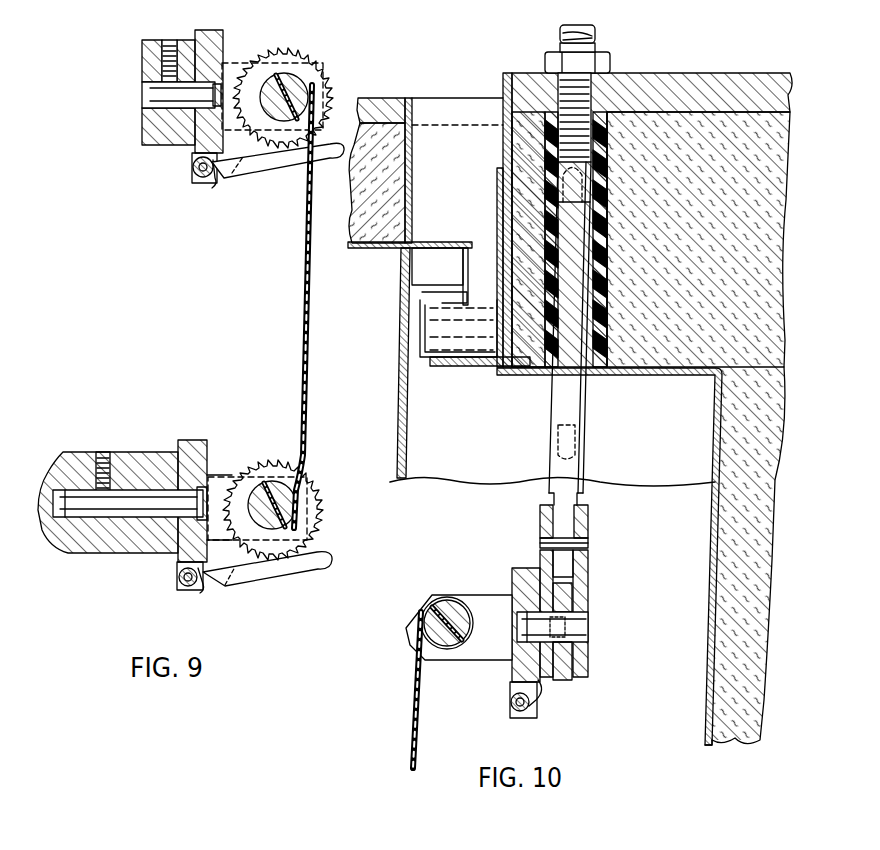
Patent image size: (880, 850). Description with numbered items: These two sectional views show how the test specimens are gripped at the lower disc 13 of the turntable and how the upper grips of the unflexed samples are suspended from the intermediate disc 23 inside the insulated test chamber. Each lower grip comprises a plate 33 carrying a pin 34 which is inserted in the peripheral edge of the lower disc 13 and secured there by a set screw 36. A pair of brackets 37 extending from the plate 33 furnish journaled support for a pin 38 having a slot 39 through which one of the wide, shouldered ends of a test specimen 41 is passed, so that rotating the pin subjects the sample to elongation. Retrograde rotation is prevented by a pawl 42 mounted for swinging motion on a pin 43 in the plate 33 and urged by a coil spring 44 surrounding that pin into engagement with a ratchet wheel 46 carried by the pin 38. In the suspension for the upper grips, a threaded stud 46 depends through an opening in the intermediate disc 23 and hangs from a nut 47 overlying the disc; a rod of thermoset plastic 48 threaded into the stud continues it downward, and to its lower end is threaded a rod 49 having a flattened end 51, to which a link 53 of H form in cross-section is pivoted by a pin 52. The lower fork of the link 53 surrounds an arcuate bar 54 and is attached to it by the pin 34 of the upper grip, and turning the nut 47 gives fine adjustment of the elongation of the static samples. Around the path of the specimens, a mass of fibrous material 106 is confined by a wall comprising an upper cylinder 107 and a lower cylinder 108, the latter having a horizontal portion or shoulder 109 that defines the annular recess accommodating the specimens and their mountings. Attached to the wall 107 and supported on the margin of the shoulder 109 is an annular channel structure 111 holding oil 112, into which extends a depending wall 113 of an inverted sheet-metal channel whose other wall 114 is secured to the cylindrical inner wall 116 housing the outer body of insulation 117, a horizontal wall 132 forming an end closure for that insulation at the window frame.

In FIG. 9, the lower disc 13 is at (134, 454).
In FIG. 10, the intermediate disc 23 is at (690, 76).
In FIG. 9, the plate 33 is at (210, 42).
In FIG. 10, the plate 33 is at (525, 568).
In FIG. 9, the pin 34 is at (157, 101).
In FIG. 10, the pin 34 is at (585, 628).
In FIG. 9, the set screw 36 is at (167, 44).
In FIG. 9, the brackets 37 is at (270, 66).
In FIG. 10, the brackets 37 is at (494, 585).
In FIG. 9, the pin 38 is at (304, 93).
In FIG. 10, the pin 38 is at (466, 620).
In FIG. 9, the slot 39 is at (248, 537).
In FIG. 10, the slot 39 is at (462, 641).
In FIG. 9, the test specimen 41 is at (303, 259).
In FIG. 10, the test specimen 41 is at (421, 688).
In FIG. 9, the pawl 42 is at (294, 163).
In FIG. 9, the pin 43 is at (194, 169).
In FIG. 10, the pin 43 is at (525, 710).
In FIG. 9, the coil spring 44 is at (210, 180).
In FIG. 10, the coil spring 44 is at (532, 704).
In FIG. 9, the ratchet wheel / threaded stud 46 is at (320, 76).
In FIG. 10, the ratchet wheel / threaded stud 46 is at (600, 96).
In FIG. 10, the nut 47 is at (545, 62).
In FIG. 10, the rod of thermoset plastic 48 is at (578, 397).
In FIG. 10, the rod 49 is at (583, 465).
In FIG. 10, the flattened end 51 is at (572, 505).
In FIG. 10, the pin 52 is at (586, 540).
In FIG. 10, the link 53 is at (586, 591).
In FIG. 9, the arcuate bar 54 is at (150, 138).
In FIG. 10, the arcuate bar 54 is at (566, 680).
In FIG. 10, the fibrous material 106 is at (765, 482).
In FIG. 10, the upper cylinder 107 is at (503, 160).
In FIG. 10, the lower cylinder 108 is at (713, 592).
In FIG. 10, the horizontal portion or shoulder 109 is at (666, 374).
In FIG. 10, the annular channel structure 111 is at (420, 328).
In FIG. 10, the oil 112 is at (445, 307).
In FIG. 10, the depending wall 113 is at (482, 236).
In FIG. 10, the wall 114 is at (413, 268).
In FIG. 10, the cylindrical inner wall 116 is at (410, 154).
In FIG. 10, the insulation 117 is at (400, 199).
In FIG. 10, the horizontal wall 132 is at (380, 249).